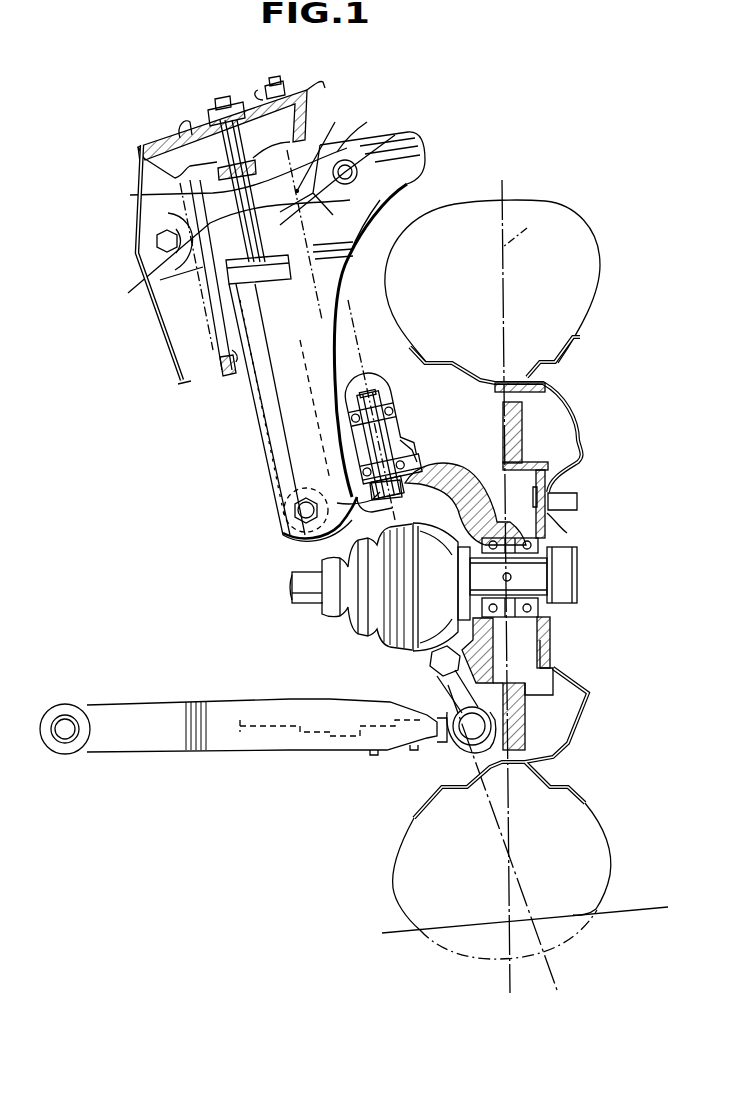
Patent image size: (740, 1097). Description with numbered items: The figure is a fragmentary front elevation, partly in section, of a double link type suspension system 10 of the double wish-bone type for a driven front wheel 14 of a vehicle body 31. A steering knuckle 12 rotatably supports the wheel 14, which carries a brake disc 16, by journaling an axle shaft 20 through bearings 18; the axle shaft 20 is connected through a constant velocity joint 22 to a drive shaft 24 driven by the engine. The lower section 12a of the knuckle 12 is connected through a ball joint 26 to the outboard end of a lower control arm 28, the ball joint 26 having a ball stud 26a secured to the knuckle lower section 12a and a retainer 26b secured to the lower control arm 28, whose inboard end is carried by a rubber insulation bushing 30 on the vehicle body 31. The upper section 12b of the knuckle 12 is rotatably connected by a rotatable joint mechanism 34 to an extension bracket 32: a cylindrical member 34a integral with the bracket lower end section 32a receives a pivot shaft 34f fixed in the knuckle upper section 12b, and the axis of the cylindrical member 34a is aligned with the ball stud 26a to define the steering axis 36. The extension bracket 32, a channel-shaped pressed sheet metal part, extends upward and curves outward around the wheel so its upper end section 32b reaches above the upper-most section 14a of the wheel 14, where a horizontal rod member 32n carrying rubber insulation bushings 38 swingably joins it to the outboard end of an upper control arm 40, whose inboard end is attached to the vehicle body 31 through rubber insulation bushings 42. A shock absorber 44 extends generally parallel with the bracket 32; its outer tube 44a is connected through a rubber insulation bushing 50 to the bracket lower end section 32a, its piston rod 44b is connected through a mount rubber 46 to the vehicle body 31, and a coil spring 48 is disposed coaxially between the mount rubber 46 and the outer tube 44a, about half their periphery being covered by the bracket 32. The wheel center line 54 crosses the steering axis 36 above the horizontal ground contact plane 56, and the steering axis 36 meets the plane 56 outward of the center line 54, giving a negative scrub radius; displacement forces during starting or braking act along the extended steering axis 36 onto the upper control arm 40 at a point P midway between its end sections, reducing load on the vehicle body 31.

The double link type suspension system 10 is at (148, 487).
The steering knuckle 12 is at (493, 488).
The lower section of the knuckle 12a is at (480, 647).
The upper section of the knuckle 12b is at (453, 473).
The front wheel 14 is at (582, 273).
The upper-most section of the wheel 14a is at (522, 199).
The brake disc 16 is at (515, 430).
The bearings 18 is at (527, 610).
The axle shaft 20 is at (532, 575).
The constant velocity joint 22 is at (358, 610).
The drive shaft 24 is at (305, 604).
The ball joint 26 is at (455, 732).
The ball stud 26a is at (433, 682).
The retainer 26b is at (460, 740).
The lower control arm 28 is at (185, 737).
The rubber insulation bushing 30 is at (70, 712).
The vehicle body 31 is at (163, 327).
The extension bracket 32 is at (292, 432).
The lower end section of the extension bracket 32a is at (292, 467).
The upper end section of the extension bracket 32b is at (392, 196).
The rod member 32n is at (410, 134).
The rotatable joint mechanism 34 is at (375, 380).
The cylindrical member 34a is at (400, 433).
The pivot shaft 34f is at (380, 505).
The steering axis 36 is at (498, 818).
The rubber insulation bushings 38 is at (365, 126).
The upper control arm 40 is at (325, 147).
The rubber insulation bushings 42 is at (182, 275).
The shock absorber 44 is at (250, 395).
The outer tube 44a is at (267, 407).
The piston rod 44b is at (238, 183).
The mount rubber 46 is at (205, 135).
The coil spring 48 is at (210, 328).
The rubber insulation bushing 50 is at (288, 507).
The center line of the wheel 54 is at (527, 228).
The horizontal plane 56 is at (635, 907).
The point P is at (344, 169).